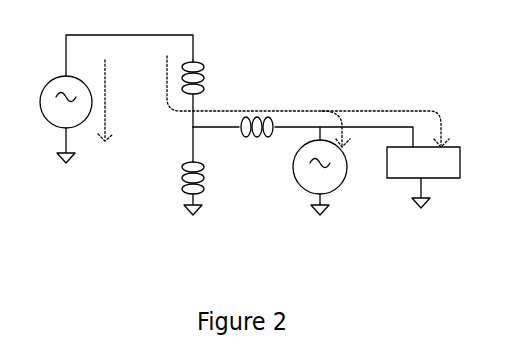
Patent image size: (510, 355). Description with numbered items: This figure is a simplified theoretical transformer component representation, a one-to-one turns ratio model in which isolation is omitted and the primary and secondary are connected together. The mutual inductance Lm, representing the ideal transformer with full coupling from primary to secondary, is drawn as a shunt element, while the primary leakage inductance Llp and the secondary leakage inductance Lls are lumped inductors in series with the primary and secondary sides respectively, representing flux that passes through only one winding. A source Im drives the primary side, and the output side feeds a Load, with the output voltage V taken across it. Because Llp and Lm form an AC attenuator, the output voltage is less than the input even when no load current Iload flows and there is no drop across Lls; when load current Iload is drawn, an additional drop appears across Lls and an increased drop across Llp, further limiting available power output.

The current source (magnetizing current) Im is at (66, 119).
The primary leakage inductance Llp is at (209, 93).
The secondary leakage inductance Lls is at (257, 138).
The mutual inductance Lm is at (180, 171).
The voltage source V is at (320, 171).
The load Load is at (423, 177).
The load current Iload is at (320, 101).